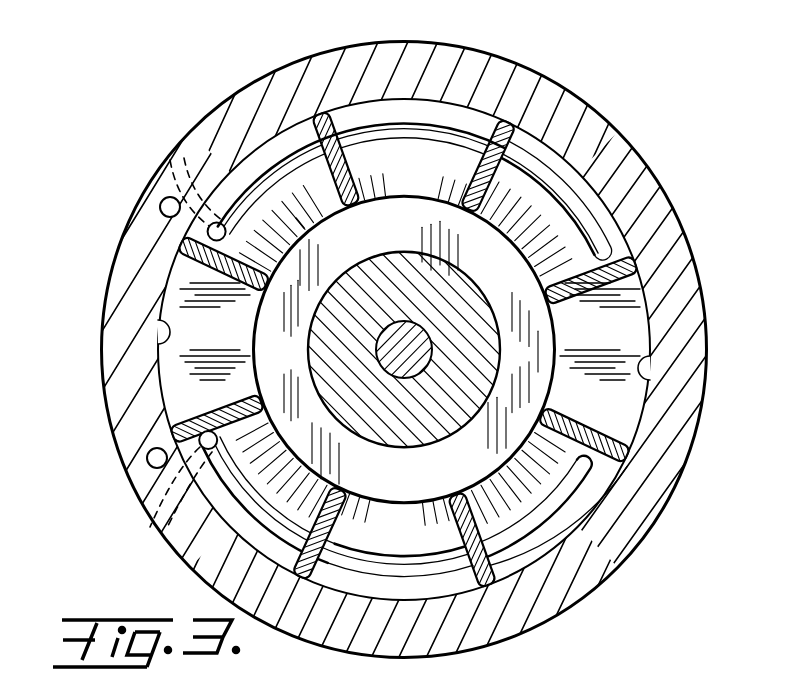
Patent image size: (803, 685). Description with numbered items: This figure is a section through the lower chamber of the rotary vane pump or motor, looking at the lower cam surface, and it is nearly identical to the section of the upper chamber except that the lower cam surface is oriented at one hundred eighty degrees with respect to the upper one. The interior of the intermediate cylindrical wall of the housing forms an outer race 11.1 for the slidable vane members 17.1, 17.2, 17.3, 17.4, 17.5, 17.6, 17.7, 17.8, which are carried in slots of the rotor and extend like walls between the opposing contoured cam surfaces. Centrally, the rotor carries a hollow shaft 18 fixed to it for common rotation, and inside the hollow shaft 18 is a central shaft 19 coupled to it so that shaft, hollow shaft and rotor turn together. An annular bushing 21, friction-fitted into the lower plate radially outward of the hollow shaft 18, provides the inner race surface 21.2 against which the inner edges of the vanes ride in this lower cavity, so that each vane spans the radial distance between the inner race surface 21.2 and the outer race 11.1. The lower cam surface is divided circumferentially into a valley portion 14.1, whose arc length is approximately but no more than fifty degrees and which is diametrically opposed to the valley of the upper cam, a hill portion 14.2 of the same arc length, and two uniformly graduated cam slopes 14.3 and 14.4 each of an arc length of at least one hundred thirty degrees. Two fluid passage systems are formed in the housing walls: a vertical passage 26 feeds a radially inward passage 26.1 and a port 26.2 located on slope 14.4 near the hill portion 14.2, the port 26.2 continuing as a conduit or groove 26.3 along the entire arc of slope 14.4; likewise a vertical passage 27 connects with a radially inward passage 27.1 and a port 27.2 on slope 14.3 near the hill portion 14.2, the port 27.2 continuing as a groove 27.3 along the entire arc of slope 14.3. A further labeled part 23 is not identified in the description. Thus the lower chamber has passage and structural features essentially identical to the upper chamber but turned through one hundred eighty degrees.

The outer race 11.1 is at (162, 328).
The valley portion 14.1 is at (577, 333).
The hill portion 14.2 is at (197, 345).
The cam slope 14.3 is at (392, 535).
The cam slope 14.4 is at (392, 178).
The vane member 17.1 is at (642, 282).
The vane member 17.2 is at (512, 140).
The vane member 17.3 is at (312, 108).
The vane member 17.4 is at (187, 256).
The vane member 17.5 is at (178, 426).
The vane member 17.6 is at (312, 576).
The vane member 17.7 is at (492, 583).
The vane member 17.8 is at (618, 443).
The hollow shaft 18 is at (393, 407).
The central shaft 19 is at (394, 359).
The annular bushing 21 is at (393, 474).
The inner race surface 21.2 is at (302, 225).
The vertical passage 26 is at (160, 207).
The radially inward passage 26.1 is at (162, 158).
The port 26.2 is at (217, 222).
The conduit or groove 26.3 is at (490, 132).
The vertical passage 27 is at (147, 461).
The radially inward passage 27.1 is at (152, 521).
The port 27.2 is at (199, 440).
The conduit or groove 27.3 is at (433, 567).
The housing part 23 is at (633, 679).